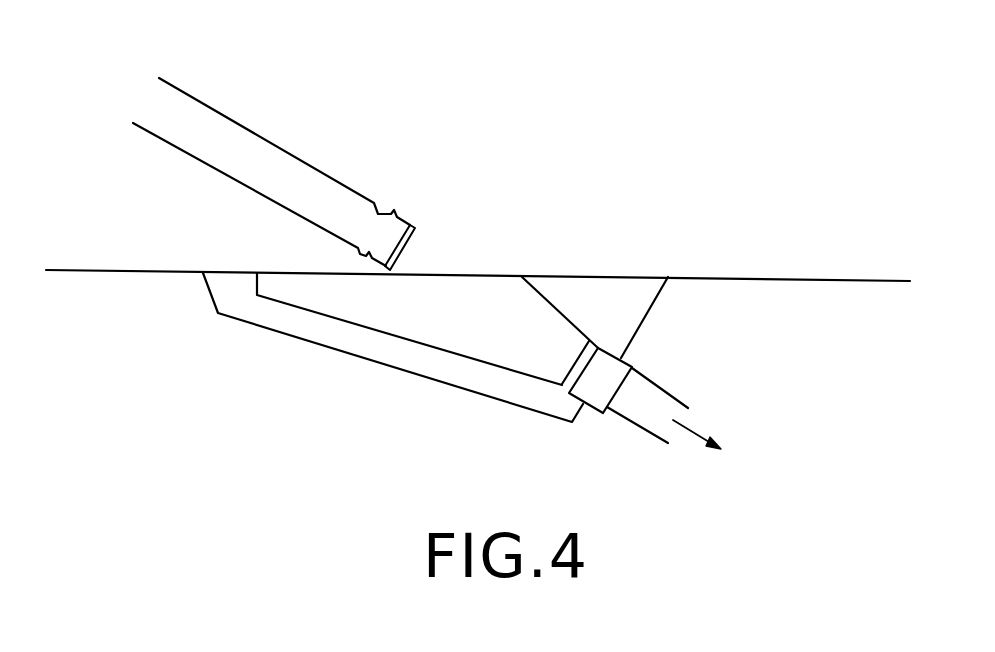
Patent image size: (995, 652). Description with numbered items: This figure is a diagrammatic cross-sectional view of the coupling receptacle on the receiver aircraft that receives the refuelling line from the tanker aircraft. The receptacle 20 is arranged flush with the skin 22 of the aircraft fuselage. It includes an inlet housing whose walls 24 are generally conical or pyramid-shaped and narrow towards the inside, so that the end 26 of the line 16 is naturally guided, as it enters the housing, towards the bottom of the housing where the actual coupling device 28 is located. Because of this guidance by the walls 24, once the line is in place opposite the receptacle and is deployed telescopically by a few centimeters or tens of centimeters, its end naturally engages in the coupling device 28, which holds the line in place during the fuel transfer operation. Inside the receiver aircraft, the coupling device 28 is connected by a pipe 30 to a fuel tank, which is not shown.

The line 16 is at (198, 101).
The receptacle 20 is at (505, 310).
The skin 22 is at (807, 278).
The walls 24 is at (561, 322).
The end 26 is at (412, 227).
The coupling device 28 is at (608, 372).
The pipe 30 is at (647, 431).